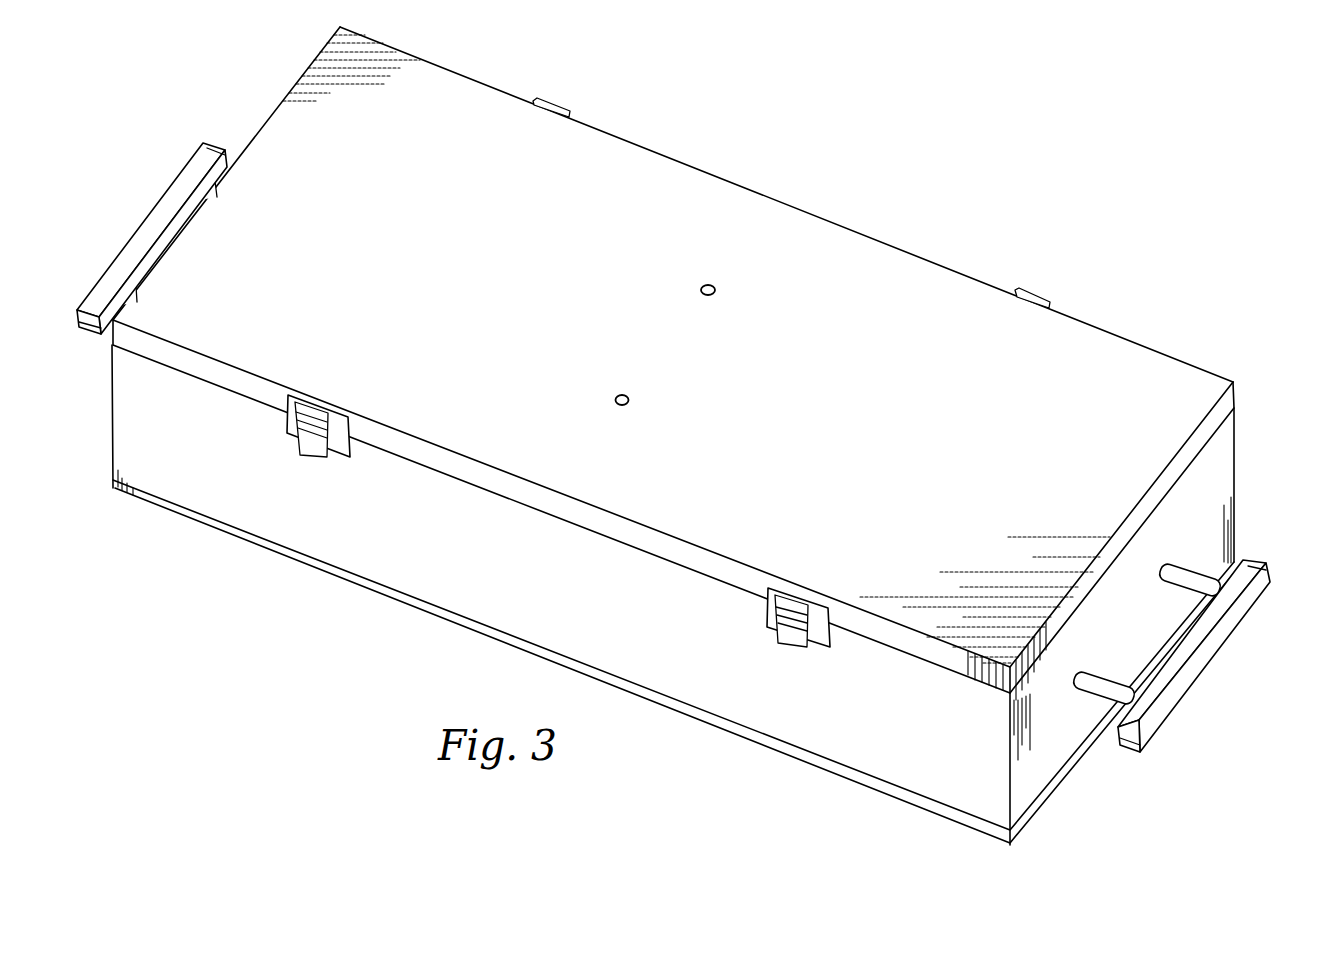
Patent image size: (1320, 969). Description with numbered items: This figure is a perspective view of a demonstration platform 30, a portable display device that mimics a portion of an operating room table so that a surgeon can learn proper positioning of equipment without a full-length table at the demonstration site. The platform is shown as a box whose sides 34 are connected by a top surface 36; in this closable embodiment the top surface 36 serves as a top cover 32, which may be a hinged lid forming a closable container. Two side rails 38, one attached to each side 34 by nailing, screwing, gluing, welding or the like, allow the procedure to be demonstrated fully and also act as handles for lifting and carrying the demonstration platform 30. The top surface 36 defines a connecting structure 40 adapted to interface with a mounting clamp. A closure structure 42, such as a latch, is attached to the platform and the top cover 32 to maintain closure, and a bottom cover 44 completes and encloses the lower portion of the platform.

The demonstration platform 30 is at (889, 212).
The top cover 32 is at (1128, 341).
The sides 34 is at (1043, 772).
The top surface 36 is at (651, 167).
The side rails 38 is at (1225, 628).
The connecting structure 40 is at (619, 394).
The closure structure 42 is at (792, 633).
The bottom cover 44 is at (197, 517).